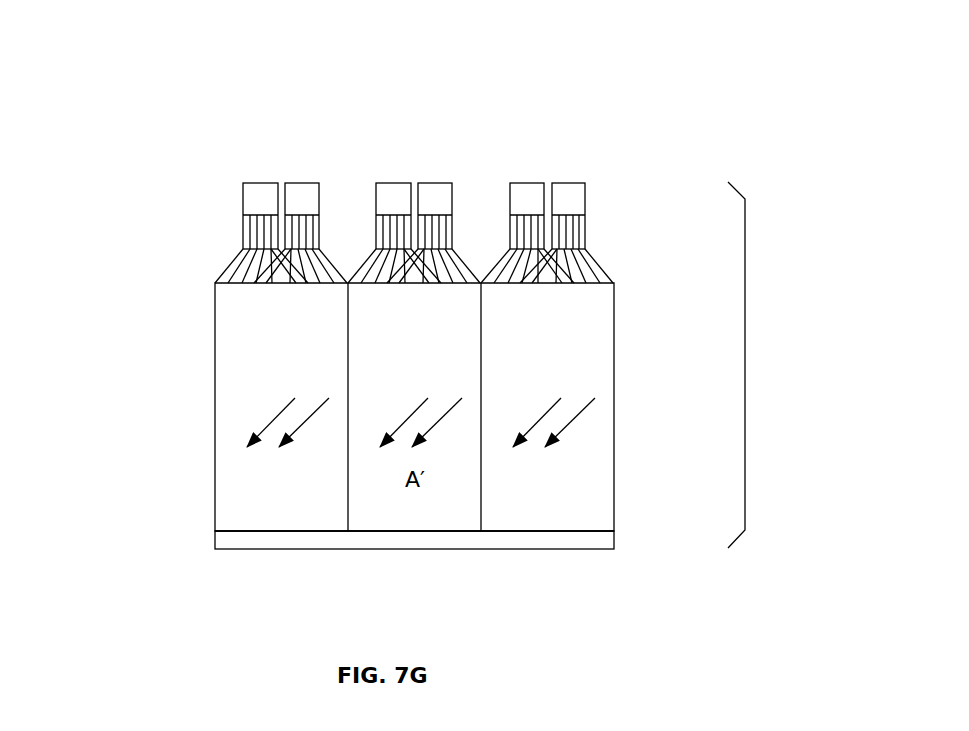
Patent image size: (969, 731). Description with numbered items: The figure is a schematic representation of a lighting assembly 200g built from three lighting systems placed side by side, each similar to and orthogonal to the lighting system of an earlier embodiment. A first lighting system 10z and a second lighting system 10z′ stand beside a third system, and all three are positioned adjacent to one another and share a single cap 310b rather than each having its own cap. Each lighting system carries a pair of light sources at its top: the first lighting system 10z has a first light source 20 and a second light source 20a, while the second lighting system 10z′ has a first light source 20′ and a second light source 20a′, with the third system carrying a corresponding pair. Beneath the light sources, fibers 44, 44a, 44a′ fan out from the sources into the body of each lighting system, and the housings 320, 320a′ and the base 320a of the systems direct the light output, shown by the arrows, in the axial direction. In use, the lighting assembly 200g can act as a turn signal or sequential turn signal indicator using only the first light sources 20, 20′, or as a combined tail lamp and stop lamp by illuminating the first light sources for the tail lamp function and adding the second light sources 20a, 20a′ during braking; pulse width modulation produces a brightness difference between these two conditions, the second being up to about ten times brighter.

The first lighting system 10z is at (98, 192).
The second lighting system 10z′ is at (413, 108).
The first light source 20 is at (255, 182).
The second light source 20a is at (313, 182).
The first light source 20′ is at (388, 182).
The second light source 20a′ is at (445, 182).
The fiber bundle 44 is at (235, 262).
The fiber bundle 44a is at (453, 247).
The fiber bundle 44a′ is at (607, 268).
The lighting assembly 200g is at (745, 383).
The housing 320 is at (213, 493).
The housing bottom wall 320a is at (442, 537).
The housing 320a′ is at (615, 505).
The cap 310b is at (283, 550).